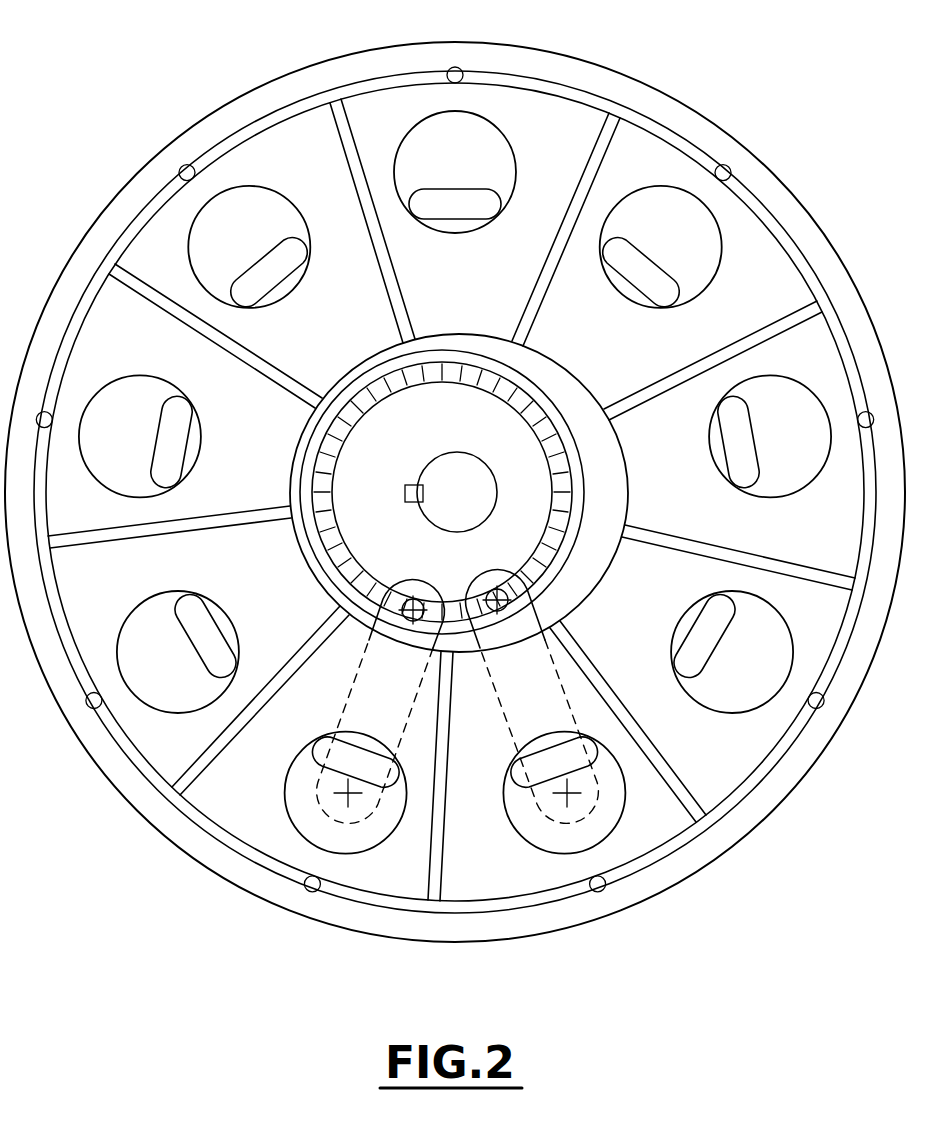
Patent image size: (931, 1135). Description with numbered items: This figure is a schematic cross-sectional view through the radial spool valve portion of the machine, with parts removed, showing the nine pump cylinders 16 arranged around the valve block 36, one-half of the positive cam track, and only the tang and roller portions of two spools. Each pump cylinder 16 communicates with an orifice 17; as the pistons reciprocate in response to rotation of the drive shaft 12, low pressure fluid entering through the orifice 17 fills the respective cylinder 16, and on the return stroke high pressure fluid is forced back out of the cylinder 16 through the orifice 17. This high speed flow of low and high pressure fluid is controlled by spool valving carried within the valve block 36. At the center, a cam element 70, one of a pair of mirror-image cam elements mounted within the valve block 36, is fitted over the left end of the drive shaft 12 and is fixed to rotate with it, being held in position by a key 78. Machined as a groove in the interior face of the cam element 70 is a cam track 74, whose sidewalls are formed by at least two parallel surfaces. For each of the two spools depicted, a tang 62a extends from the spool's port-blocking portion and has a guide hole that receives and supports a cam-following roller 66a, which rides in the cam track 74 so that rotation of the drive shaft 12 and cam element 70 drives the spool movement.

The valve block 36 is at (601, 78).
The pump cylinders 16 is at (218, 198).
The orifice 17 is at (290, 266).
The cam element 70 is at (553, 402).
The cam track 74 is at (322, 518).
The drive shaft 12 is at (457, 467).
The key 78 is at (414, 485).
The tang 62a is at (430, 590).
The cam-following roller 66a is at (399, 613).